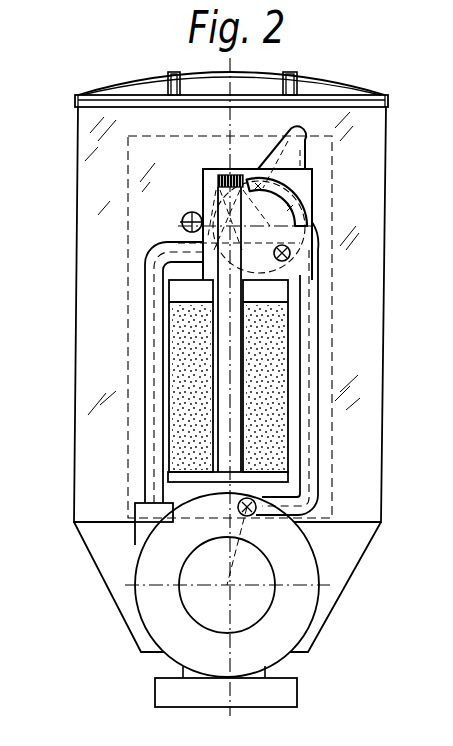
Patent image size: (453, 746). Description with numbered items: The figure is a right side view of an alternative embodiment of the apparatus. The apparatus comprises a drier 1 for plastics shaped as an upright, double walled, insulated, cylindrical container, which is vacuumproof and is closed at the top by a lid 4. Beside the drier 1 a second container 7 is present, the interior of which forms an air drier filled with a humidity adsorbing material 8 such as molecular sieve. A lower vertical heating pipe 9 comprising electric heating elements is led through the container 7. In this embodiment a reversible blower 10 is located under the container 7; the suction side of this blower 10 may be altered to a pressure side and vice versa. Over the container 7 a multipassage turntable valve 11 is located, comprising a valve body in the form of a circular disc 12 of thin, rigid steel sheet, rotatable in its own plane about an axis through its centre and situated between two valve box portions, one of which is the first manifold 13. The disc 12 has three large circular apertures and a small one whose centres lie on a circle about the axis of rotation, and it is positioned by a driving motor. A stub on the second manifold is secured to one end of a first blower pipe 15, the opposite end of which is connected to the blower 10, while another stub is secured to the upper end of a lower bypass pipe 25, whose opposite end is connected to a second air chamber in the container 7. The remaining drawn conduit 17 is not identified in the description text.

The drier 1 is at (378, 247).
The lid 4 is at (332, 88).
The second container 7 is at (288, 370).
The humidity adsorbing material 8 is at (268, 436).
The lower vertical heating pipe 9 is at (237, 343).
The reversible blower 10 is at (305, 575).
The multipassage turntable valve 11 is at (312, 187).
The circular disc 12 is at (313, 217).
The first manifold 13 is at (203, 182).
The first blower pipe 15 is at (313, 392).
The supply conduit 17 is at (145, 443).
The lower bypass pipe 25 is at (147, 255).